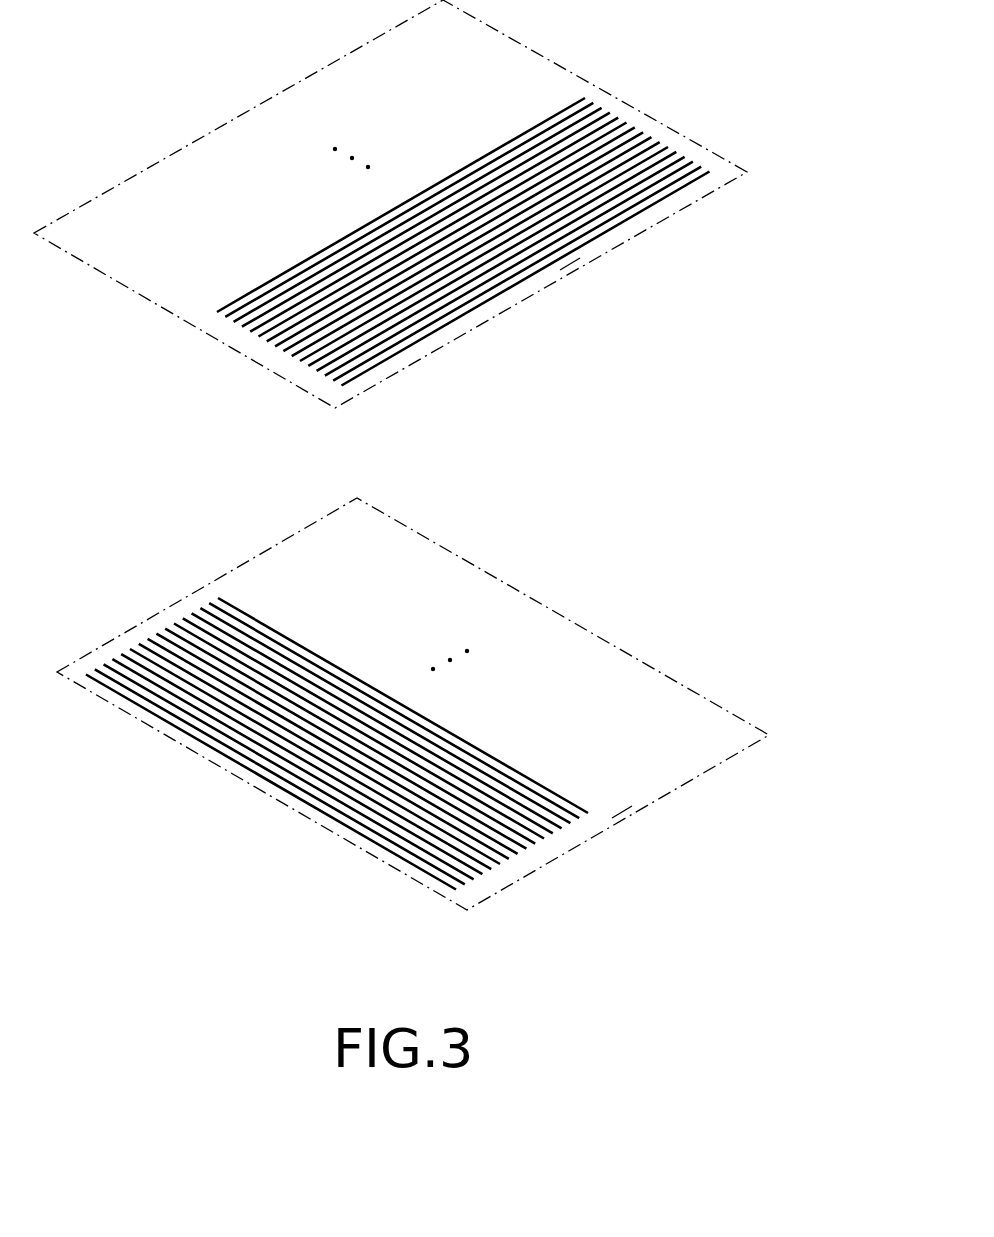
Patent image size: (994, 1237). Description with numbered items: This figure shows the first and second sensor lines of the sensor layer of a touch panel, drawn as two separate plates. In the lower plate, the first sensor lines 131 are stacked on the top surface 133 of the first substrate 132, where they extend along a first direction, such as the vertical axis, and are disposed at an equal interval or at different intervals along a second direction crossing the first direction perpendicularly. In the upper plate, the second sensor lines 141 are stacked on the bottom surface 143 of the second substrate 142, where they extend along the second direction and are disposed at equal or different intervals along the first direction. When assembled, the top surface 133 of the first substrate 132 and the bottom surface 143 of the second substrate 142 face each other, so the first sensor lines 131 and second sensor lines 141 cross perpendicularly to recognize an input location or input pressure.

The first sensor lines 131 is at (515, 865).
The first substrate 132 is at (693, 778).
The top surface 133 is at (622, 812).
The second sensor lines 141 is at (478, 312).
The second substrate 142 is at (673, 213).
The bottom surface 143 is at (570, 263).